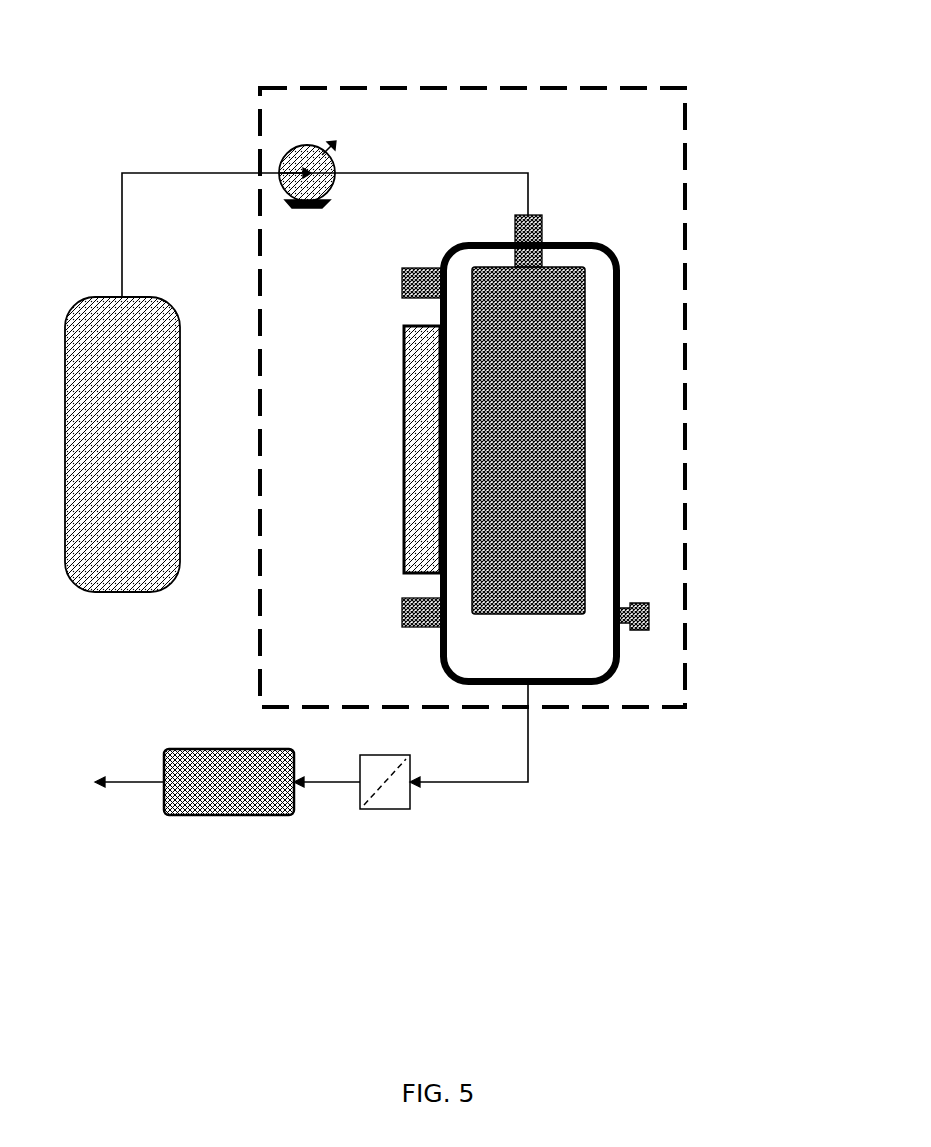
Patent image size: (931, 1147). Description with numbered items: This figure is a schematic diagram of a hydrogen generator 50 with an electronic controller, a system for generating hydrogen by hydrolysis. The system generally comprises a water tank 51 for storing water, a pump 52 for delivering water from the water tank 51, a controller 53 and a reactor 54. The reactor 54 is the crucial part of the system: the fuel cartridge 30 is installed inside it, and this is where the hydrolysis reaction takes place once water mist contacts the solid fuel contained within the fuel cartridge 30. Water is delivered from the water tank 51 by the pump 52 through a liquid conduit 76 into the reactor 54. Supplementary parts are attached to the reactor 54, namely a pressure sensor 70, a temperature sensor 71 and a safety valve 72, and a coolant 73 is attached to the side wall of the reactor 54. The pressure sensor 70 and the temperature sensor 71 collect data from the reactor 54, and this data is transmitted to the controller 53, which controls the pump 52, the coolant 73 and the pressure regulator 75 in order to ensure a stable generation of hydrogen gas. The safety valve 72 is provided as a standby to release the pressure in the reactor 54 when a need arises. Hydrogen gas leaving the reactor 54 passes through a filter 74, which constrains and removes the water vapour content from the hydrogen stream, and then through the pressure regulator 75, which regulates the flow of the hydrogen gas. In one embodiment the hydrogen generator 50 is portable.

The fuel cartridge 30 is at (599, 564).
The hydrogen generator 50 is at (433, 442).
The water tank 51 is at (140, 607).
The pump 52 is at (273, 148).
The controller 53 is at (698, 297).
The reactor 54 is at (633, 503).
The pressure sensor 70 is at (390, 276).
The temperature sensor 71 is at (389, 624).
The safety valve 72 is at (644, 641).
The coolant 73 is at (386, 445).
The filter 74 is at (422, 805).
The pressure regulator 75 is at (203, 825).
The liquid conduit 76 is at (416, 154).